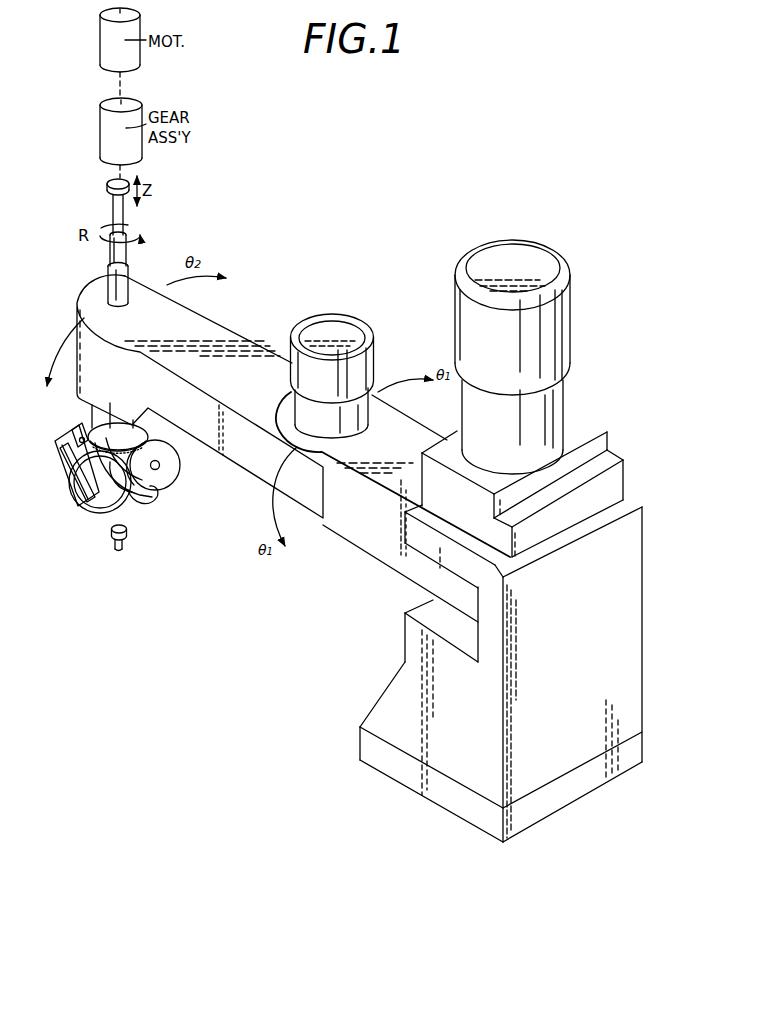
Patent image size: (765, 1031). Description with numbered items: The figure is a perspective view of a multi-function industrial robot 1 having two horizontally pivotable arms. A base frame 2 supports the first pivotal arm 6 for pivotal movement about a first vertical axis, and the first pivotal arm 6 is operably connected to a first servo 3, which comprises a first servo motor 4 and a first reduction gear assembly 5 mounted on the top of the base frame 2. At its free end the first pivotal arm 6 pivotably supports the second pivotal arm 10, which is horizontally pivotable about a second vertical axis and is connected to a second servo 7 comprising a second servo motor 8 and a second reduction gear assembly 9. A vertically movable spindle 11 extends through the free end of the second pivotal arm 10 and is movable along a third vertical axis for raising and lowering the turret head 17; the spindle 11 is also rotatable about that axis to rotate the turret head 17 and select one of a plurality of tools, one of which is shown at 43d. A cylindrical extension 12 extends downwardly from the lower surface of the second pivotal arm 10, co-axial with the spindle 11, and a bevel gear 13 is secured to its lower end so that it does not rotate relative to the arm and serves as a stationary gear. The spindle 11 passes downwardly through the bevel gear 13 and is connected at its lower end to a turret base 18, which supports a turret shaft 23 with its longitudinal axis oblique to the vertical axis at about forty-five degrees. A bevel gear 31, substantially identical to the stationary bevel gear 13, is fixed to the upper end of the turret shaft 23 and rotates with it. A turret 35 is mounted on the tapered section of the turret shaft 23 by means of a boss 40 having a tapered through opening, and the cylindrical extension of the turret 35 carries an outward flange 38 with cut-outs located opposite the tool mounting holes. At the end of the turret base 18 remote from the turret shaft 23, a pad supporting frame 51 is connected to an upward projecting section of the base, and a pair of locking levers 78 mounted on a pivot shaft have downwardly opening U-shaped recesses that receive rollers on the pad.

The multi-function industrial robot 1 is at (615, 333).
The base frame 2 is at (630, 682).
The first servo 3 is at (545, 357).
The first servo motor 4 is at (531, 317).
The first reduction gear assembly 5 is at (535, 427).
The first pivotal arm 6 is at (353, 540).
The second servo 7 is at (365, 376).
The second servo motor 8 is at (351, 358).
The second reduction gear assembly 9 is at (417, 328).
The second pivotal arm 10 is at (243, 347).
The vertically movable spindle 11 is at (109, 278).
The cylindrical extension 12 is at (108, 420).
The bevel gear 13 is at (121, 428).
The turret head 17 is at (67, 467).
The turret base 18 is at (146, 506).
The turret shaft 23 is at (162, 465).
The bevel gear 31 is at (167, 482).
The turret 35 is at (111, 514).
The flange 38 is at (141, 517).
The boss 40 is at (93, 501).
The tool 43d is at (120, 551).
The pad supporting frame 51 is at (60, 444).
The locking lever 78 is at (70, 429).